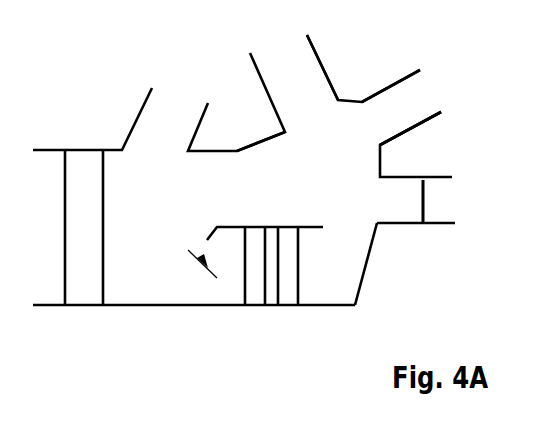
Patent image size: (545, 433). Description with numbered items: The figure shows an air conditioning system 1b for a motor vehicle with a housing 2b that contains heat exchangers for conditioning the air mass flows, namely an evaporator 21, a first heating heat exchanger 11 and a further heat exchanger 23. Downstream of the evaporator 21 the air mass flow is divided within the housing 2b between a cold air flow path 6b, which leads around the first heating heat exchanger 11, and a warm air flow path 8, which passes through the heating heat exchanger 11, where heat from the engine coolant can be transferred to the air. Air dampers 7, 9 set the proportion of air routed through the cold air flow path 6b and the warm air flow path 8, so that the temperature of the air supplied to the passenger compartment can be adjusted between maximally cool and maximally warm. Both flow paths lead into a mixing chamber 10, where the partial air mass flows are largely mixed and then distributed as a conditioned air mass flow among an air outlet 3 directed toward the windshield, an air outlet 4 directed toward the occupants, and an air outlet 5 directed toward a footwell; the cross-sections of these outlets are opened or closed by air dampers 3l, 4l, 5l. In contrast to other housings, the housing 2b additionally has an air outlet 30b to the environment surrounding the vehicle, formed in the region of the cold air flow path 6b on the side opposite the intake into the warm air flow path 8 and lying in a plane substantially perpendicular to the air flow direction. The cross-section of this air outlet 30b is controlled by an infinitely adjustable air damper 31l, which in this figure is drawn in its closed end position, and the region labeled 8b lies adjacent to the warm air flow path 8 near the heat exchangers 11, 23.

The air conditioning system 1b is at (492, 140).
The housing 2b is at (118, 148).
The air outlet 3 is at (312, 103).
The air damper 3l is at (277, 77).
The air outlet 4 is at (390, 127).
The air damper 4l is at (388, 110).
The air outlet 5 is at (412, 209).
The air damper 5l is at (423, 201).
The cold air flow path 6b is at (157, 239).
The air damper 7 is at (227, 226).
The warm air flow path 8 is at (345, 275).
The lower chamber 8b is at (285, 195).
The air damper 9 is at (203, 290).
The mixing chamber 10 is at (357, 176).
The first heating heat exchanger 11 is at (257, 280).
The evaporator 21 is at (88, 273).
The heat exchanger 23 is at (288, 280).
The air outlet 30b is at (200, 109).
The air damper 31l is at (165, 117).